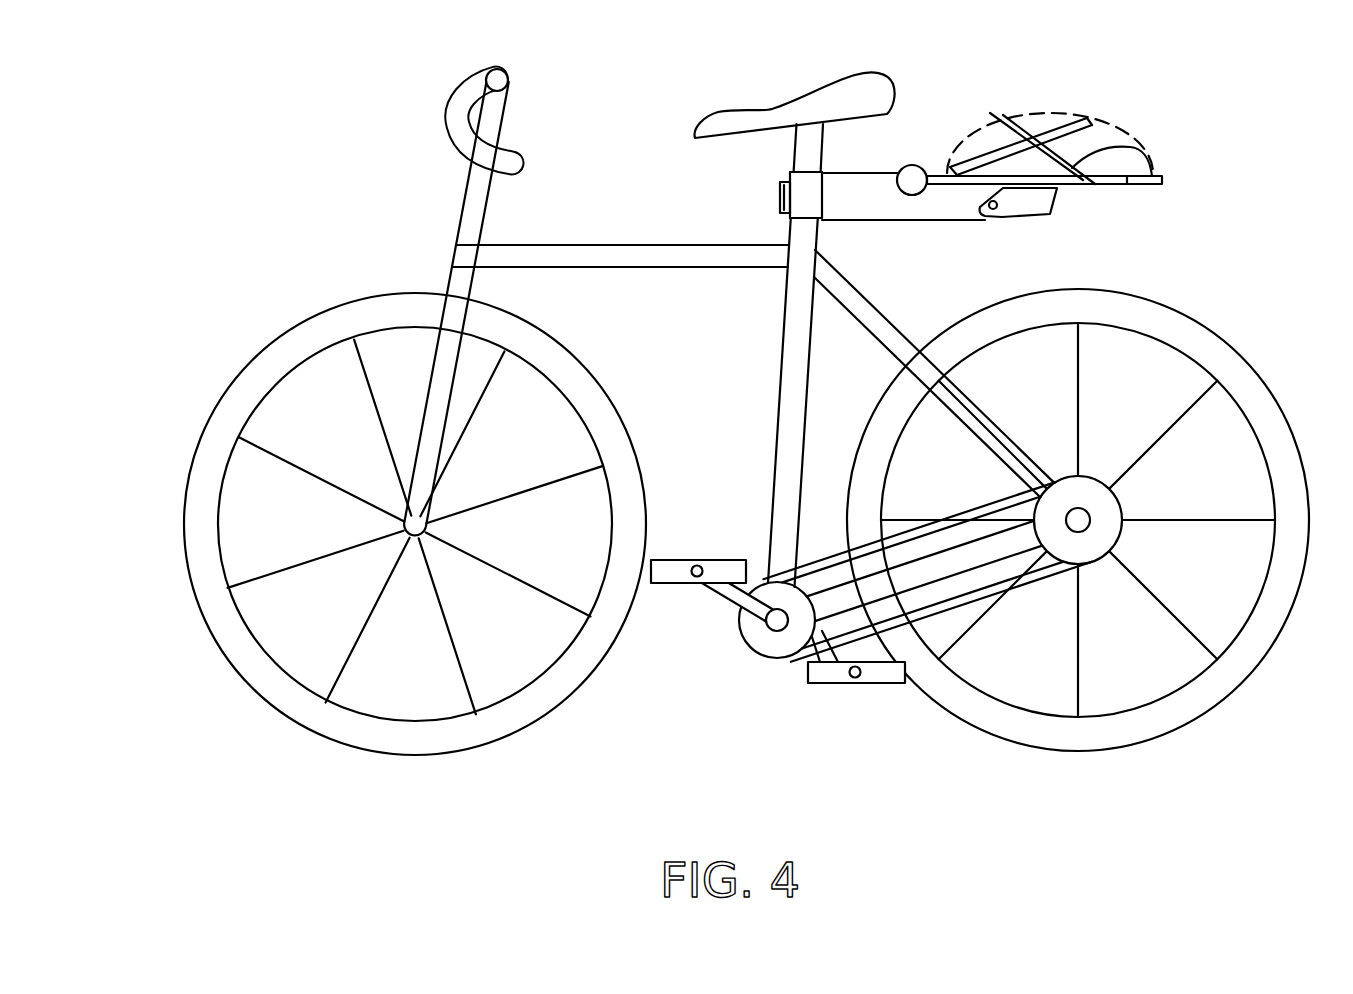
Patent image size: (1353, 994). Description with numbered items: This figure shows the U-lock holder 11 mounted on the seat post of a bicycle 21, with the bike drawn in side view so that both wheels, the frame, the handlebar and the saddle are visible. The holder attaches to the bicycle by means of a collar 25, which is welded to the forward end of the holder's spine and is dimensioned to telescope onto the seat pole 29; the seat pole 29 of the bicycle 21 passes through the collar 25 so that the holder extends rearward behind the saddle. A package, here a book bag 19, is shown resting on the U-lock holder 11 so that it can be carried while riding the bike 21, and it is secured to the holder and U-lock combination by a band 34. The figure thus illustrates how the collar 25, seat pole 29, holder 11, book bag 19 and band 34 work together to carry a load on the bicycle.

The bicycle 21 is at (138, 483).
The U-lock holder 11 is at (912, 132).
The book bag 19 is at (1038, 143).
The band 34 is at (1143, 148).
The collar 25 is at (810, 200).
The seat pole 29 is at (797, 150).